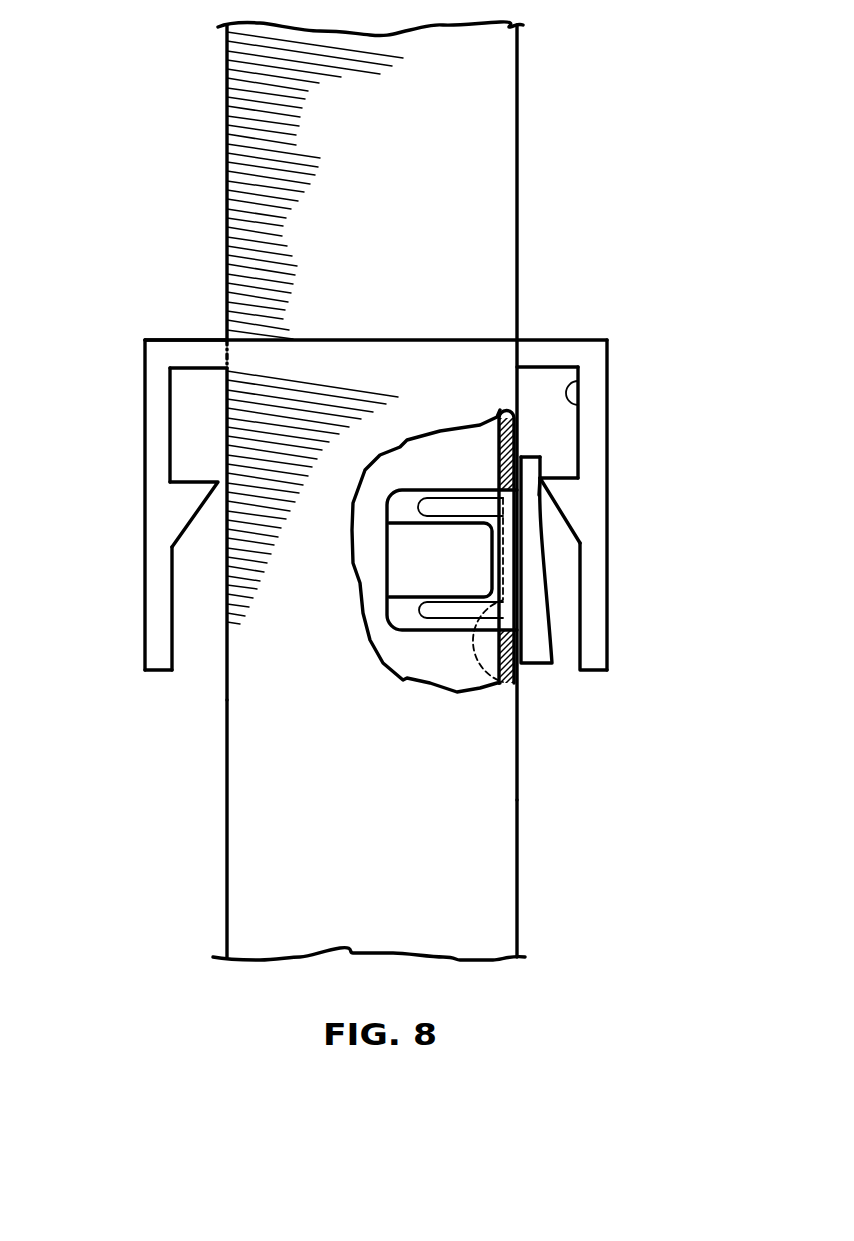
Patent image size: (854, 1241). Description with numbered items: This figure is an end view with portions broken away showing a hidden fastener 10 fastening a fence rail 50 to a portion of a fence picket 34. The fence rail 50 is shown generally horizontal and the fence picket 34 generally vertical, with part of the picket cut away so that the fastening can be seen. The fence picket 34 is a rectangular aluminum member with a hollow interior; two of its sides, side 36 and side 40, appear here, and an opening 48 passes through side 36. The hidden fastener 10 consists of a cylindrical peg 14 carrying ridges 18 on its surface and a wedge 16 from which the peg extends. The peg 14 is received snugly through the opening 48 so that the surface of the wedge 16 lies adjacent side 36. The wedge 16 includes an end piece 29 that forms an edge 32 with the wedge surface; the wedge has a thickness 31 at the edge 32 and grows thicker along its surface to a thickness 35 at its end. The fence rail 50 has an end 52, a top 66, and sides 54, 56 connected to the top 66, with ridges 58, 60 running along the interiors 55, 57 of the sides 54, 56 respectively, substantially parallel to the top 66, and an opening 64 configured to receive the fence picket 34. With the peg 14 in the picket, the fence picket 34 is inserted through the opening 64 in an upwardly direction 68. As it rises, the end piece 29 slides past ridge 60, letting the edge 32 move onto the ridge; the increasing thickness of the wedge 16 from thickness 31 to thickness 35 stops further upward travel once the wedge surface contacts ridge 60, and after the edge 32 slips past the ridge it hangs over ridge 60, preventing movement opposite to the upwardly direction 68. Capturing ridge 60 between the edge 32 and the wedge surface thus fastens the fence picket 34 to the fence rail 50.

The hidden fastener 10 is at (362, 636).
The peg 14 is at (453, 645).
The wedge 16 is at (550, 572).
The ridges 18 is at (440, 507).
The end piece 29 is at (530, 452).
The thickness 31 is at (540, 482).
The edge 32 is at (541, 468).
The fence picket 34 is at (528, 221).
The thickness 35 is at (566, 650).
The side 36 is at (518, 828).
The side 40 is at (228, 921).
The opening 48 is at (518, 690).
The fence rail 50 is at (122, 533).
The end 52 is at (153, 655).
The side 54 is at (133, 439).
The interior 55 is at (174, 662).
The side 56 is at (628, 493).
The interior 57 is at (578, 392).
The ridge 58 is at (200, 488).
The ridge 60 is at (562, 478).
The opening 64 is at (527, 356).
The top 66 is at (197, 334).
The upwardly direction 68 is at (185, 135).